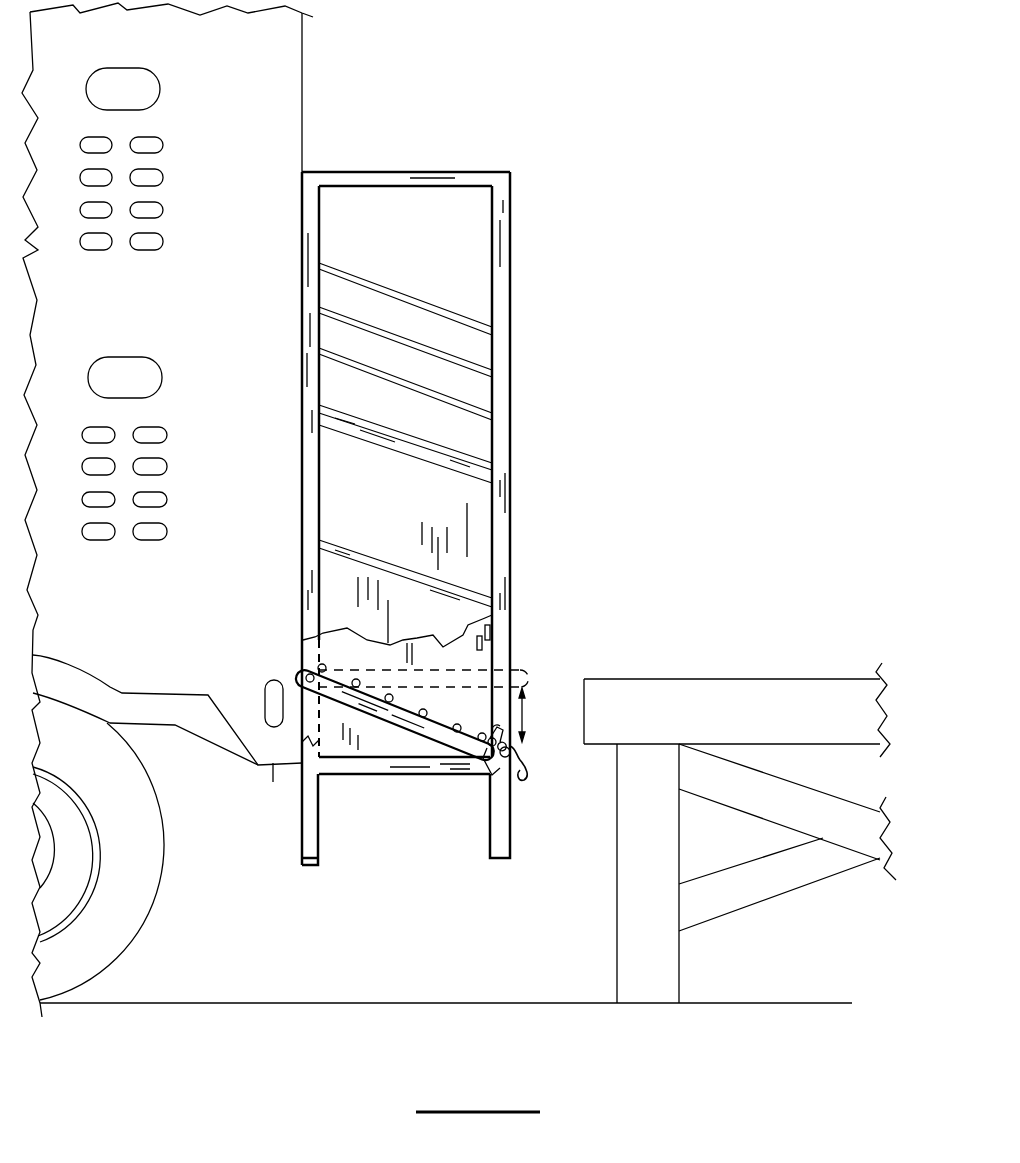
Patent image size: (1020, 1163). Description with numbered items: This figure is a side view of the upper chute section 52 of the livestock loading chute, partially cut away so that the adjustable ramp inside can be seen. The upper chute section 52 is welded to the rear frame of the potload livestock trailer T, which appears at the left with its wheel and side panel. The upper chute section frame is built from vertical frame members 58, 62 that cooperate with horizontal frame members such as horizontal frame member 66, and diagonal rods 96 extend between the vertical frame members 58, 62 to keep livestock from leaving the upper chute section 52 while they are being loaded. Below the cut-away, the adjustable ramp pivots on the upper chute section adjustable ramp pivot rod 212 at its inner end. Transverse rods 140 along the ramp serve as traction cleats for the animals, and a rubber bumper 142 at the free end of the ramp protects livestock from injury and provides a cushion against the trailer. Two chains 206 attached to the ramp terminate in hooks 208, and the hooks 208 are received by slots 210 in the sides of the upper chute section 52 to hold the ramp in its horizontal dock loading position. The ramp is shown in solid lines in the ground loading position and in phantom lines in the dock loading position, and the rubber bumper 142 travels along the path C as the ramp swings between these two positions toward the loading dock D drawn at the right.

The upper chute section 52 is at (545, 152).
The vertical frame member 58 is at (303, 494).
The vertical frame member 62 is at (511, 300).
The horizontal frame member 66 is at (389, 170).
The diagonal rods 96 is at (388, 289).
The transverse rods 140 is at (425, 710).
The rubber bumper 142 is at (498, 763).
The chains 206 is at (513, 748).
The hooks 208 is at (527, 772).
The slots 210 is at (493, 632).
The upper chute section adjustable ramp pivot rod 212 is at (303, 672).
The livestock trailer T is at (305, 57).
The dock D is at (800, 679).
The path of bumper movement C is at (527, 715).